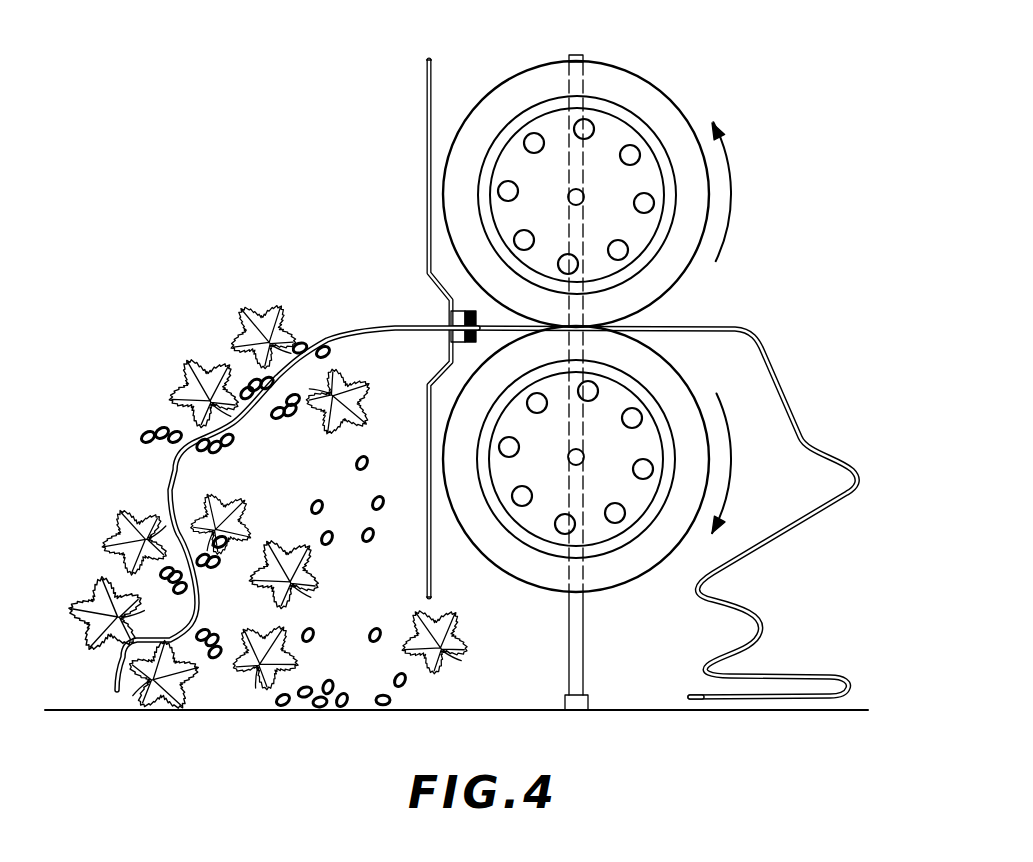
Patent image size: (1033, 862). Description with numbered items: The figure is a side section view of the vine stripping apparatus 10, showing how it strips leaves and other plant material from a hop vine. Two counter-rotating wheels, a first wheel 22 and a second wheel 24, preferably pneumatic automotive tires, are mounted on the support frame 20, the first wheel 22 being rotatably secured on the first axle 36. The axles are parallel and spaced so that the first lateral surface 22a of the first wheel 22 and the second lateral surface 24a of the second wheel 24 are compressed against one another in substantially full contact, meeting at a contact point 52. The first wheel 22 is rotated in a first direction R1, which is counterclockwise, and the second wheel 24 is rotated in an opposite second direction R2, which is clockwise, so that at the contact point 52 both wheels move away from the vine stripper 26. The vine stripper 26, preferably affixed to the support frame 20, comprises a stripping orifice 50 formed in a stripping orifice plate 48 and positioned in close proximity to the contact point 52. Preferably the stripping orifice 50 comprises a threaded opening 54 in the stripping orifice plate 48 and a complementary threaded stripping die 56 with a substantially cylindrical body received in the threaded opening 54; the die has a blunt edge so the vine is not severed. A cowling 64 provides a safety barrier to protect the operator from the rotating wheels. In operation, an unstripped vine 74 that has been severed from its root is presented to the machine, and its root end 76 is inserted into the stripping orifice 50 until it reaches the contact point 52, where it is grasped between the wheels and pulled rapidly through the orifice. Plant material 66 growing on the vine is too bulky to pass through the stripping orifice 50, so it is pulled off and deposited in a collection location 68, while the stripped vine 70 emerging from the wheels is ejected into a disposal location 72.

The vine stripping apparatus 10 is at (748, 63).
The support frame 20 is at (577, 647).
The first wheel 22 is at (576, 166).
The first lateral surface 22a is at (543, 63).
The second wheel 24 is at (576, 481).
The second lateral surface 24a is at (643, 582).
The vine stripper 26 is at (386, 328).
The first axle 36 is at (581, 198).
The stripping orifice plate 48 is at (443, 302).
The stripping orifice 50 is at (462, 320).
The contact point 52 is at (445, 373).
The threaded opening 54 is at (477, 313).
The threaded stripping die 56 is at (447, 335).
The cowling 64 is at (427, 127).
The plant material 66 is at (249, 380).
The collection location 68 is at (363, 703).
The stripped vine 70 is at (780, 540).
The disposal location 72 is at (650, 709).
The unstripped vine 74 is at (170, 478).
The root end 76 is at (690, 695).
The first direction R1 is at (737, 191).
The second direction R2 is at (737, 464).